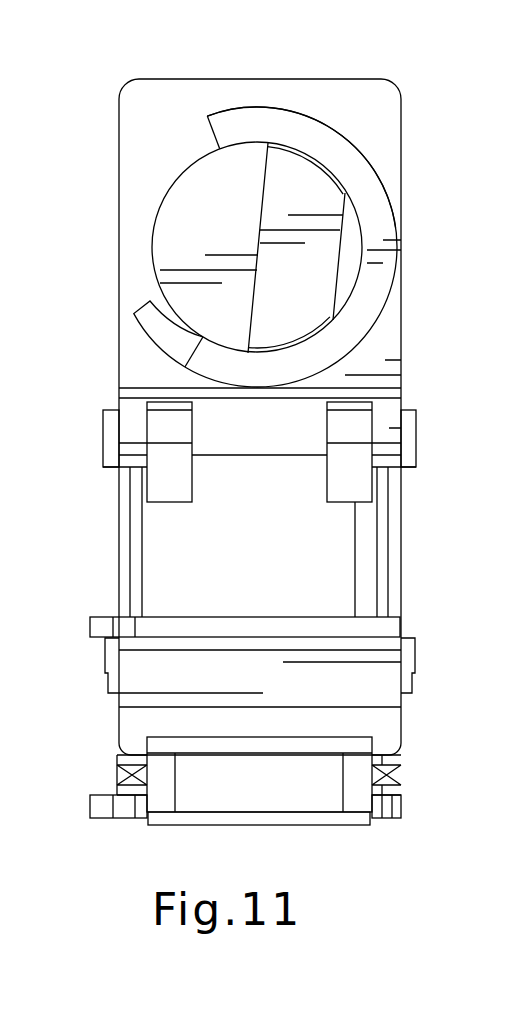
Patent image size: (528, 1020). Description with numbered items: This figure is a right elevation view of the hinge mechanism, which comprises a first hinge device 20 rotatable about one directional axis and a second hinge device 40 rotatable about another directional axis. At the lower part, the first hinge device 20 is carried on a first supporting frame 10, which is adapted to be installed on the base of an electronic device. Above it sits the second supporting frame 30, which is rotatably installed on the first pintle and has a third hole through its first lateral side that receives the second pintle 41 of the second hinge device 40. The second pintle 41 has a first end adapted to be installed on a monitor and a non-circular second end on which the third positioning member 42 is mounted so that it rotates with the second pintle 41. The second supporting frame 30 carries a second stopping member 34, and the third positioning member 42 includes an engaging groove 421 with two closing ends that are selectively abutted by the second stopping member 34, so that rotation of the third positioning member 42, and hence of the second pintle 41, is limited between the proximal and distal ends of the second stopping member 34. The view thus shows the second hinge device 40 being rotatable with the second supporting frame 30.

The first supporting frame 10 is at (388, 727).
The first hinge device 20 is at (436, 816).
The second supporting frame 30 is at (390, 118).
The second stopping member 34 is at (152, 326).
The second hinge device 40 is at (290, 247).
The second pintle 41 is at (383, 226).
The third positioning member 42 is at (355, 328).
The engaging groove 421 is at (155, 233).